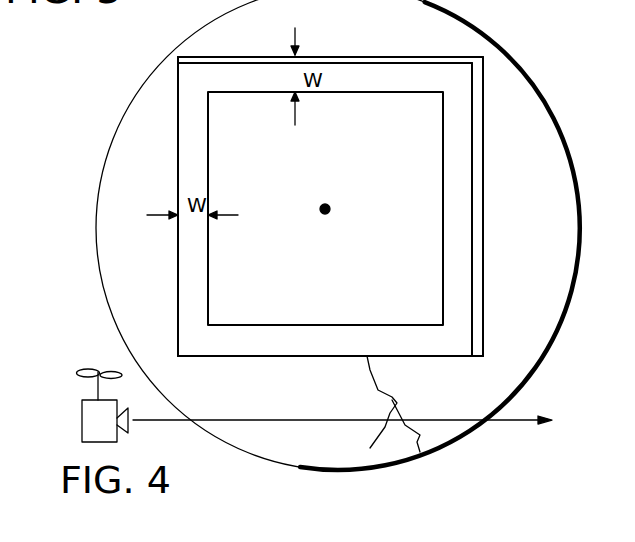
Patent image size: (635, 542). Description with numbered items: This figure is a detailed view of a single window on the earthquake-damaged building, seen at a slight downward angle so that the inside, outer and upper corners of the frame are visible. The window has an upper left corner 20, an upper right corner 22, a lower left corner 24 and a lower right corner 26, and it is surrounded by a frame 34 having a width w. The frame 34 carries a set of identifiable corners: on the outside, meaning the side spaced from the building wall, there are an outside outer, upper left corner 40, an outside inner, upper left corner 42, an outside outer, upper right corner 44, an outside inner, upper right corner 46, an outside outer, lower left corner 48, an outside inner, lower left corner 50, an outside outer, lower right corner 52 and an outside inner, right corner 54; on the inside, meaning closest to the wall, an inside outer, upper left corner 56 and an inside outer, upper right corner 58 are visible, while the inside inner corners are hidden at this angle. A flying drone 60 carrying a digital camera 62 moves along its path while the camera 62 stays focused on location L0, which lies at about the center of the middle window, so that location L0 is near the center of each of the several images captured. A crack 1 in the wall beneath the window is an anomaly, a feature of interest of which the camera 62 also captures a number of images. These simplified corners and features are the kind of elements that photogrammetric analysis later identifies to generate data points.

The crack 1 is at (370, 370).
The upper left corner 20 is at (192, 75).
The upper right corner 22 is at (458, 80).
The lower left corner 24 is at (193, 343).
The lower right corner 26 is at (455, 341).
The frame 34 is at (185, 288).
The outside outer, upper left corner 40 is at (178, 63).
The outside inner, upper left corner 42 is at (213, 93).
The outside outer, upper right corner 44 is at (483, 63).
The outside inner, upper right corner 46 is at (440, 93).
The outside outer, lower left corner 48 is at (178, 356).
The outside inner, lower left corner 50 is at (210, 323).
The outside outer, lower right corner 52 is at (472, 356).
The outside inner, right corner 54 is at (440, 325).
The inside outer, upper left corner 56 is at (182, 62).
The inside outer, upper right corner 58 is at (483, 57).
The flying drone 60 is at (79, 379).
The digital camera 62 is at (88, 415).
The location L0 is at (333, 208).